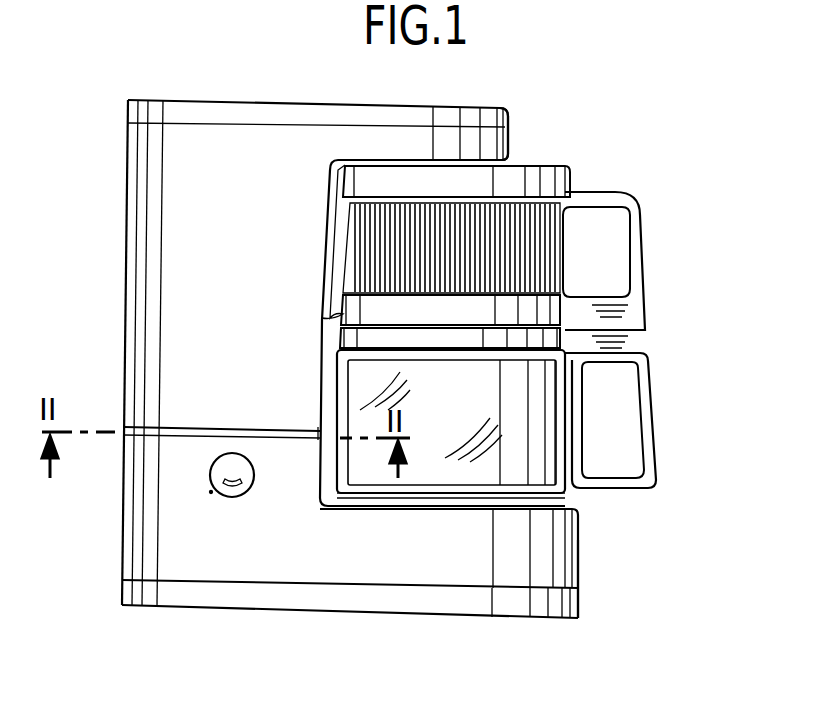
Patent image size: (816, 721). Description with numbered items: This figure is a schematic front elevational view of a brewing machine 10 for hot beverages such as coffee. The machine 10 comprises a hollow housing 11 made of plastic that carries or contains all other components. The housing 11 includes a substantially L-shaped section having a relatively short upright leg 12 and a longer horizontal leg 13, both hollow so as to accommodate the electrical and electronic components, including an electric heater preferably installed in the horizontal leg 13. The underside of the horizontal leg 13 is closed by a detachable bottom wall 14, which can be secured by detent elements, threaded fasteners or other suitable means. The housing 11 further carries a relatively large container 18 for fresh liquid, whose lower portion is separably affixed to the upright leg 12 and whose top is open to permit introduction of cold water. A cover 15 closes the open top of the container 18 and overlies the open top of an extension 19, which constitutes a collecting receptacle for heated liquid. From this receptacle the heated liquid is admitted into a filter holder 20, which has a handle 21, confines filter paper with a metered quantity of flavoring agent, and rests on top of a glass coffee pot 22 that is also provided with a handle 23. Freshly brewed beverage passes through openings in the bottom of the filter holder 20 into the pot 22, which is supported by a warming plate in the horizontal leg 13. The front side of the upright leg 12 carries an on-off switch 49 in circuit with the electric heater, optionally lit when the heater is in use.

The brewing machine 10 is at (118, 246).
The hollow housing 11 is at (596, 544).
The upright leg 12 is at (122, 505).
The horizontal leg 13 is at (580, 567).
The bottom wall 14 is at (212, 606).
The cover 15 is at (265, 100).
The container 18 is at (126, 192).
The extension 19 is at (483, 143).
The filter holder 20 is at (580, 166).
The handle 21 is at (637, 248).
The glass coffee pot 22 is at (512, 450).
The handle 23 is at (648, 375).
The on-off switch 49 is at (212, 490).